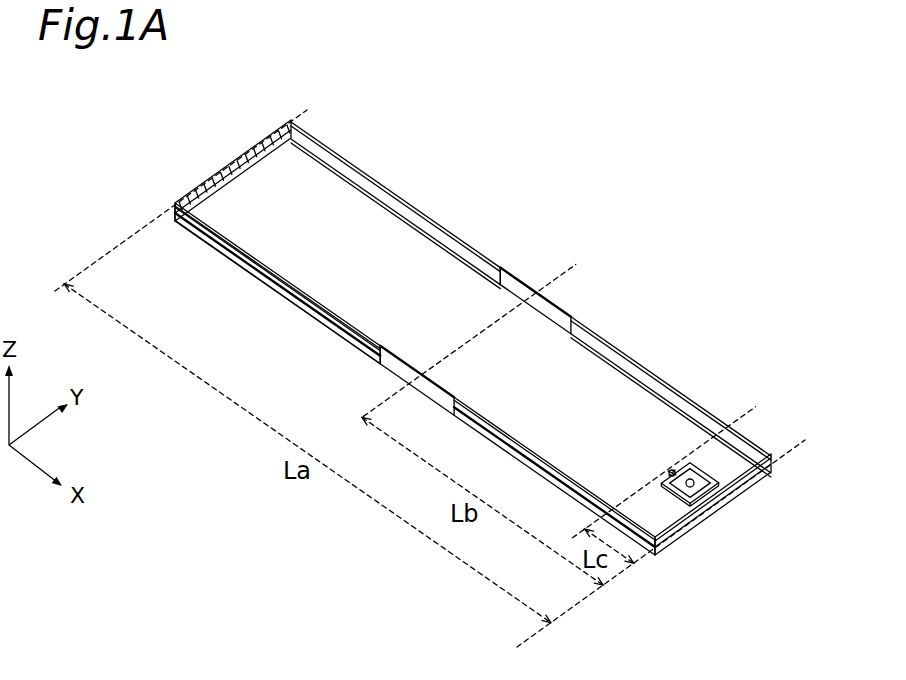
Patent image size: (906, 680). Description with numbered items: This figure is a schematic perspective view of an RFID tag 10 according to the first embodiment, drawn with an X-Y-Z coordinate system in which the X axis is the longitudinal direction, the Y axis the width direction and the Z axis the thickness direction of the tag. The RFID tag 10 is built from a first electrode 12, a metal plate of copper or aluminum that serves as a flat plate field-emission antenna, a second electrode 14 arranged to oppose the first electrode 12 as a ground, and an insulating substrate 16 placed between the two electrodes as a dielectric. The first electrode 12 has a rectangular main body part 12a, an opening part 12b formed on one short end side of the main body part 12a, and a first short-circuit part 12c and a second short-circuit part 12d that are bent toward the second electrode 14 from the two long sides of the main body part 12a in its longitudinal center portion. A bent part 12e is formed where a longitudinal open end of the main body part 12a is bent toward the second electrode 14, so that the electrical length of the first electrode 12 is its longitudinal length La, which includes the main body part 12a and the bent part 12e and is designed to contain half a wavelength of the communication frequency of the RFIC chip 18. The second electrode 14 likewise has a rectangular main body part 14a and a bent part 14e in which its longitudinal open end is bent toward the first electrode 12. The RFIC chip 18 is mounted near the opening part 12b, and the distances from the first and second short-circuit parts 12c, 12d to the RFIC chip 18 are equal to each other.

The RFID tag 10 is at (501, 164).
The first electrode 12 is at (393, 192).
The main body part 12a is at (527, 320).
The opening part 12b is at (707, 475).
The first short-circuit part 12c is at (393, 363).
The second short-circuit part 12d is at (507, 267).
The bent part 12e is at (263, 132).
The second electrode 14 is at (240, 263).
The main body part 14a is at (272, 287).
The bent part 14e is at (175, 218).
The insulating substrate 16 is at (332, 320).
The RFIC chip 18 is at (672, 472).